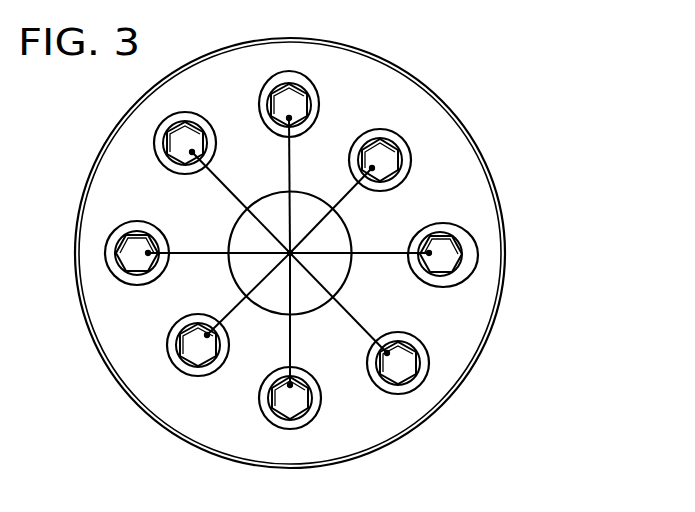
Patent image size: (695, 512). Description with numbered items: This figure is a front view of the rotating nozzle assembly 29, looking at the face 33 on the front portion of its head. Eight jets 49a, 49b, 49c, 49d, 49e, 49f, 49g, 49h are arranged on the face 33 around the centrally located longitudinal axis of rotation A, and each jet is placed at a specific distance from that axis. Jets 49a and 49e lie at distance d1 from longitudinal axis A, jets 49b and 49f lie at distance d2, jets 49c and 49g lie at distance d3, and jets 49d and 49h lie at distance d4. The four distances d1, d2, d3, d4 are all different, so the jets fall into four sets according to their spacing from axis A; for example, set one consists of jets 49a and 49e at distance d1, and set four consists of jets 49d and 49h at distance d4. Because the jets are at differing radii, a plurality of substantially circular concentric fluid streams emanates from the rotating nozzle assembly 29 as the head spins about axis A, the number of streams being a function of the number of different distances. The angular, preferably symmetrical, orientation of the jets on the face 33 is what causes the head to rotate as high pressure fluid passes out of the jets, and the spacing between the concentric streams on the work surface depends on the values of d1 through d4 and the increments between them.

The rotating nozzle assembly 29 is at (528, 158).
The face 33 is at (400, 89).
The jet 49a is at (403, 160).
The jet 49b is at (316, 104).
The jet 49c is at (200, 112).
The jet 49d is at (150, 224).
The jet 49e is at (178, 323).
The jet 49f is at (273, 421).
The jet 49g is at (415, 333).
The jet 49h is at (437, 240).
The longitudinal axis of rotation A is at (290, 253).
The distance d1 is at (288, 251).
The distance d2 is at (303, 251).
The distance d3 is at (289, 252).
The distance d4 is at (288, 238).